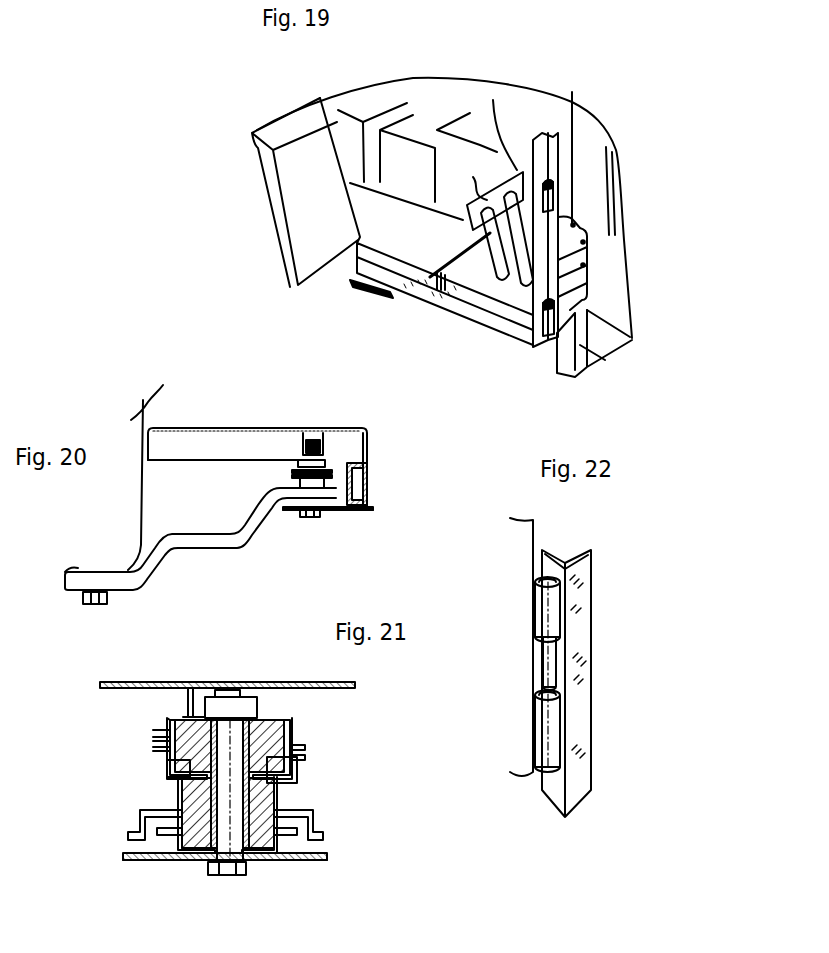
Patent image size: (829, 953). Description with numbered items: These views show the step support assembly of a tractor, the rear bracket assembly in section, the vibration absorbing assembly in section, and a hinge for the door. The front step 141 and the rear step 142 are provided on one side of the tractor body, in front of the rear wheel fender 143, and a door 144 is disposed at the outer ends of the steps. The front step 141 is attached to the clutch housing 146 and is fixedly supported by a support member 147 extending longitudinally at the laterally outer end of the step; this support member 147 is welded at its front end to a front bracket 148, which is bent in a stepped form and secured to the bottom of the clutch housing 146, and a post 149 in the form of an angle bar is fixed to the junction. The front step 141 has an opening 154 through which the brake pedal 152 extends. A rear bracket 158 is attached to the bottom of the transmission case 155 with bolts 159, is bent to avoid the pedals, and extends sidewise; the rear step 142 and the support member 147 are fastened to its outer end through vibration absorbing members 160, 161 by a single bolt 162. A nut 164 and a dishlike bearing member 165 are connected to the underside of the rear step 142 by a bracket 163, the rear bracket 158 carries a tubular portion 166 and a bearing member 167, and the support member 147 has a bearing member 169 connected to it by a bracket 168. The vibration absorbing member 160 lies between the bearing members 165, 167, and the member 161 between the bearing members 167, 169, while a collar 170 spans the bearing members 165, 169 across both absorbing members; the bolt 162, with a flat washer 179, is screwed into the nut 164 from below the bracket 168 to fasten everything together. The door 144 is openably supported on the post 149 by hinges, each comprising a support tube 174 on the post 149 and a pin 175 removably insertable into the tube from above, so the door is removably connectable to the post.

In FIG. 19, the front step 141 is at (485, 278).
In FIG. 19, the rear step 142 is at (387, 237).
In FIG. 20, the rear step 142 is at (275, 428).
In FIG. 21, the rear step 142 is at (155, 682).
In FIG. 19, the rear wheel fender 143 is at (302, 241).
In FIG. 22, the door 144 is at (535, 533).
In FIG. 19, the clutch housing 146 is at (608, 287).
In FIG. 19, the support member 147 is at (430, 297).
In FIG. 20, the support member 147 is at (370, 490).
In FIG. 19, the front bracket 148 is at (603, 347).
In FIG. 19, the post 149 is at (570, 258).
In FIG. 22, the post 149 is at (582, 603).
In FIG. 19, the brake pedal 152 is at (483, 192).
In FIG. 19, the opening 154 is at (507, 283).
In FIG. 20, the transmission case 155 is at (160, 460).
In FIG. 20, the rear bracket 158 is at (242, 535).
In FIG. 21, the rear bracket 158 is at (313, 825).
In FIG. 20, the bolt 159 is at (97, 606).
In FIG. 21, the vibration absorbing member 160 is at (287, 718).
In FIG. 21, the vibration absorbing member 161 is at (278, 800).
In FIG. 21, the bolt 162 is at (225, 845).
In FIG. 20, the bracket 163 is at (312, 440).
In FIG. 21, the bracket 163 is at (186, 705).
In FIG. 21, the nut 164 is at (245, 690).
In FIG. 20, the dishlike bearing member 165 is at (300, 463).
In FIG. 21, the dishlike bearing member 165 is at (170, 730).
In FIG. 20, the tubular portion 166 is at (310, 478).
In FIG. 21, the tubular portion 166 is at (180, 800).
In FIG. 21, the bearing member 167 is at (170, 768).
In FIG. 20, the bracket 168 is at (373, 509).
In FIG. 21, the bracket 168 is at (305, 861).
In FIG. 20, the bearing member 169 is at (320, 510).
In FIG. 21, the bearing member 169 is at (175, 860).
In FIG. 21, the collar 170 is at (280, 790).
In FIG. 19, the support tube 174 is at (553, 197).
In FIG. 22, the support tube 174 is at (560, 730).
In FIG. 22, the pin 175 is at (556, 655).
In FIG. 21, the flat washer 179 is at (305, 748).